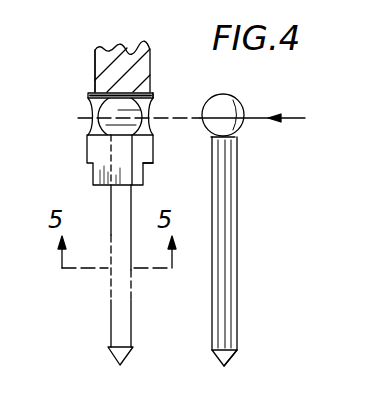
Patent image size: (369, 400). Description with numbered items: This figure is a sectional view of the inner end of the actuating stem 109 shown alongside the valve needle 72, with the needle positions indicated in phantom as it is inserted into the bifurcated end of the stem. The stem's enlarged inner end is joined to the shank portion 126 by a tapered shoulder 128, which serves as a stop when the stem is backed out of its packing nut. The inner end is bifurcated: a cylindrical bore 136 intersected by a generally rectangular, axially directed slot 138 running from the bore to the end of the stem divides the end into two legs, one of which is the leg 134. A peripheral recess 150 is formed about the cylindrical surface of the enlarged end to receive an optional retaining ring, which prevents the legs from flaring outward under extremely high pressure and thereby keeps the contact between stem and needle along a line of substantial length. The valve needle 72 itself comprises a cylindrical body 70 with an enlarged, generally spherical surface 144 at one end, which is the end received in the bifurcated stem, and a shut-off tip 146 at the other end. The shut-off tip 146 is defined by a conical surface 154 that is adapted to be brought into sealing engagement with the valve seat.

The actuating stem 109 is at (130, 62).
The shank portion 126 is at (95, 58).
The cylindrical bore 136 is at (88, 100).
The tapered shoulder 128 is at (158, 80).
The leg 134 is at (88, 141).
The axially directed slot 138 is at (138, 150).
The peripheral recess 150 is at (146, 170).
The spherical surface 144 is at (237, 104).
The valve needle 72 is at (238, 244).
The cylindrical body 70 is at (242, 243).
The shut-off tip 146 is at (213, 360).
The conical surface 154 is at (230, 352).